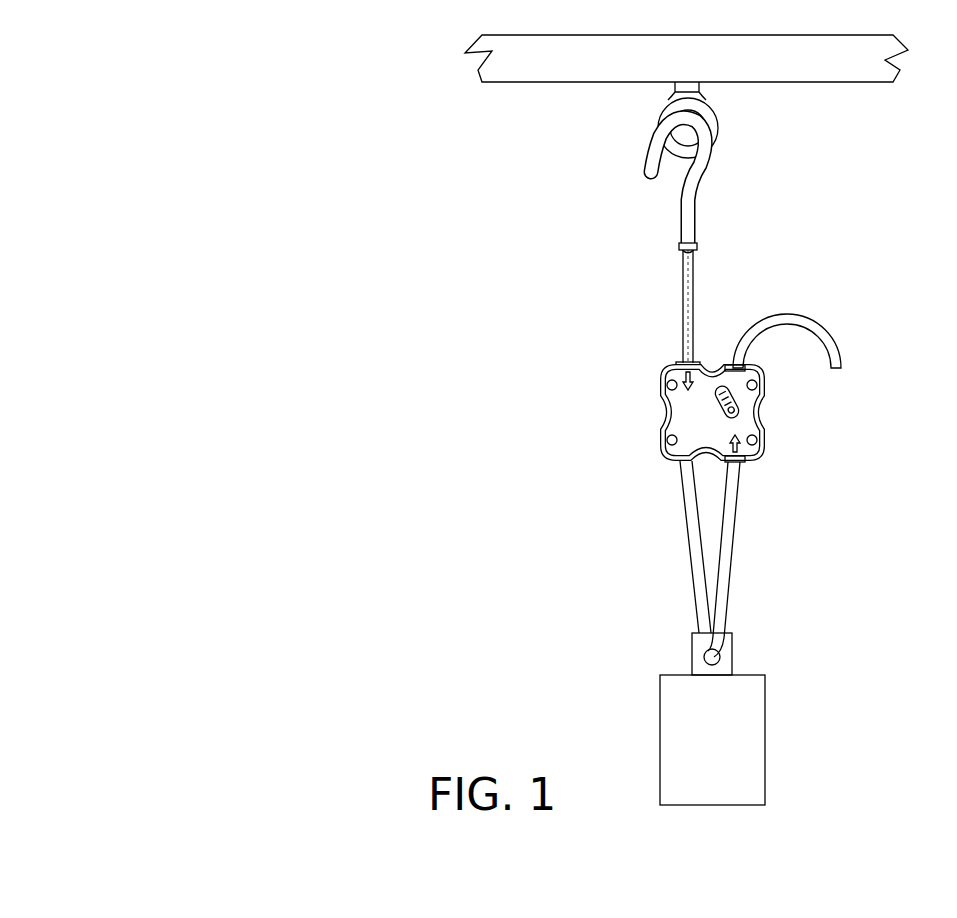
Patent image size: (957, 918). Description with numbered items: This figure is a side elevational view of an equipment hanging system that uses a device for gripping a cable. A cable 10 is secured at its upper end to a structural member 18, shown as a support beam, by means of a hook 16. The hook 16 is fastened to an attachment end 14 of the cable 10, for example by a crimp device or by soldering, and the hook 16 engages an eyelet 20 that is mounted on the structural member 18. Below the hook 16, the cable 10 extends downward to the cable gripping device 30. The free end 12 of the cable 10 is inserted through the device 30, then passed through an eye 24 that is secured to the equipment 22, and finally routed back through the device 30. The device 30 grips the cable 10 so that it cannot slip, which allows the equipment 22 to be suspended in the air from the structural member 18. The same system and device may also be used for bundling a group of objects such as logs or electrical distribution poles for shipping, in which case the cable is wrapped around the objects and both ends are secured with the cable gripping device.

The cable 10 is at (624, 298).
The free end 12 is at (832, 332).
The attachment end 14 is at (688, 265).
The hook 16 is at (703, 185).
The structural member 18 is at (835, 70).
The eyelet 20 is at (714, 103).
The equipment 22 is at (742, 738).
The eye 24 is at (725, 652).
The device 30 is at (755, 410).